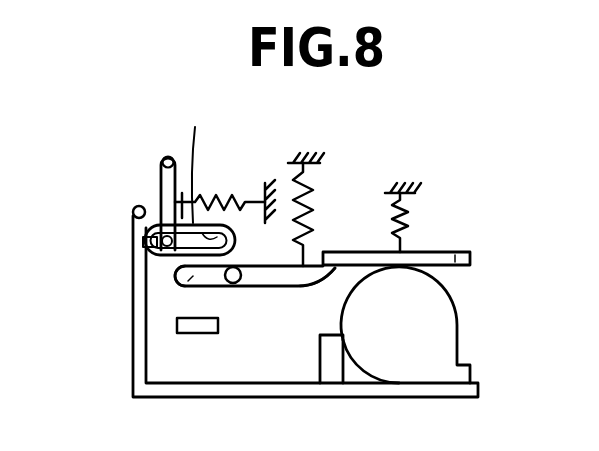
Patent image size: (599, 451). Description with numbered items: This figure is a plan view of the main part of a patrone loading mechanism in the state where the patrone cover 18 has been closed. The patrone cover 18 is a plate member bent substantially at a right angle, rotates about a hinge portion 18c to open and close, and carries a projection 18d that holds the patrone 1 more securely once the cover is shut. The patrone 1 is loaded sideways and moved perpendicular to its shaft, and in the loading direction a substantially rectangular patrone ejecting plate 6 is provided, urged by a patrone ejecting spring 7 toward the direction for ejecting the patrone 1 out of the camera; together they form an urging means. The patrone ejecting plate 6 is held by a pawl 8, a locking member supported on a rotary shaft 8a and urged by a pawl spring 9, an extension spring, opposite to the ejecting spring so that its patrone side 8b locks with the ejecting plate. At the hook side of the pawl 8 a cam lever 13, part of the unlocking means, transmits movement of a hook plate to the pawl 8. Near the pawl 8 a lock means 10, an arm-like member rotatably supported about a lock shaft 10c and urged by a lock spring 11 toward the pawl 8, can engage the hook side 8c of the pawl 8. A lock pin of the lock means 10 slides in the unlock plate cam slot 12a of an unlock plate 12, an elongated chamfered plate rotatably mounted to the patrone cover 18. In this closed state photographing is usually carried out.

The patrone 1 is at (438, 340).
The patrone ejecting plate 6 is at (455, 266).
The patrone ejecting spring 7 is at (407, 222).
The pawl 8 is at (283, 272).
The rotary shaft 8a is at (234, 284).
The patrone side 8b is at (318, 278).
The hook side 8c is at (185, 285).
The pawl spring 9 is at (305, 202).
The lock means 10 is at (160, 185).
The lock shaft 10c is at (165, 157).
The lock spring 11 is at (223, 192).
The unlock plate 12 is at (160, 256).
The unlock plate cam slot 12a is at (196, 158).
The cam lever 13 is at (178, 332).
The patrone cover 18 is at (189, 392).
The hinge portion 18c is at (133, 216).
The projection 18d is at (325, 358).